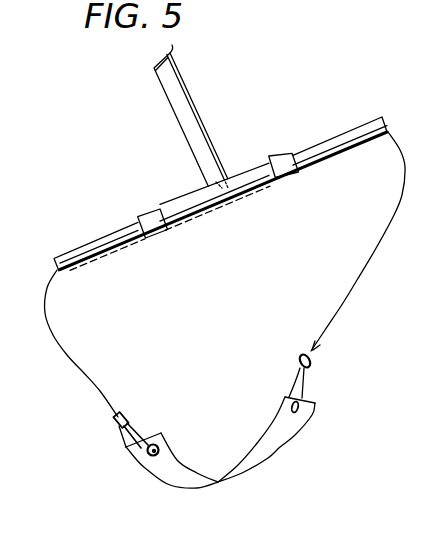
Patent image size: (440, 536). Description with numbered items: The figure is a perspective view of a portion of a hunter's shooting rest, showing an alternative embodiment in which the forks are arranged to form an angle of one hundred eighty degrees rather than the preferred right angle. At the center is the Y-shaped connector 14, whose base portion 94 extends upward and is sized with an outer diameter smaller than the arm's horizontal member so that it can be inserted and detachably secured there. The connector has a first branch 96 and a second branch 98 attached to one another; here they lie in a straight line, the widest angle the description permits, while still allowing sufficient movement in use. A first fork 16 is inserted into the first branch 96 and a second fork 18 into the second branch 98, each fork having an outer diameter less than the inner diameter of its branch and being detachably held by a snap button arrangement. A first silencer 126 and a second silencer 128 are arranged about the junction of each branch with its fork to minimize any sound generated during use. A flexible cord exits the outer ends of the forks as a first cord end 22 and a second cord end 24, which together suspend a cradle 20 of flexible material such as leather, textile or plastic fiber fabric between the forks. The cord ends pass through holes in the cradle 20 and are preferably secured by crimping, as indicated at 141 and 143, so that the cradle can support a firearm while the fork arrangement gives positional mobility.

The Y-shaped connector 14 is at (226, 176).
The first fork 16 is at (82, 245).
The second fork 18 is at (330, 160).
The cradle 20 is at (173, 488).
The first cord end 22 is at (77, 365).
The second cord end 24 is at (342, 302).
The base portion 94 is at (185, 80).
The first branch 96 is at (188, 194).
The second branch 98 is at (261, 191).
The first silencer 126 is at (150, 211).
The second silencer 128 is at (287, 153).
The crimped end of first cord end 141 is at (115, 421).
The crimped end of second cord end 143 is at (312, 364).